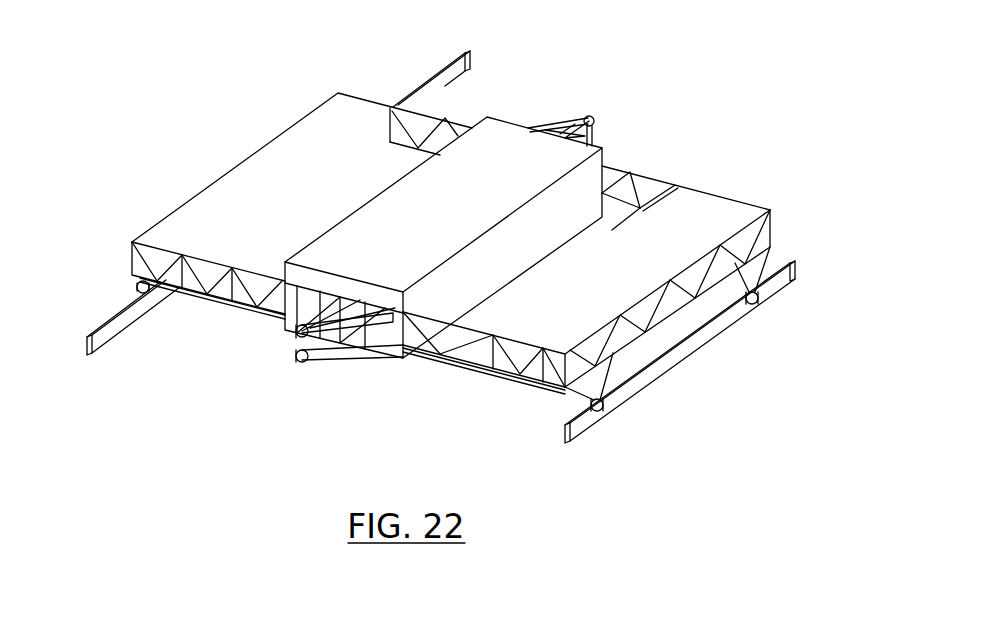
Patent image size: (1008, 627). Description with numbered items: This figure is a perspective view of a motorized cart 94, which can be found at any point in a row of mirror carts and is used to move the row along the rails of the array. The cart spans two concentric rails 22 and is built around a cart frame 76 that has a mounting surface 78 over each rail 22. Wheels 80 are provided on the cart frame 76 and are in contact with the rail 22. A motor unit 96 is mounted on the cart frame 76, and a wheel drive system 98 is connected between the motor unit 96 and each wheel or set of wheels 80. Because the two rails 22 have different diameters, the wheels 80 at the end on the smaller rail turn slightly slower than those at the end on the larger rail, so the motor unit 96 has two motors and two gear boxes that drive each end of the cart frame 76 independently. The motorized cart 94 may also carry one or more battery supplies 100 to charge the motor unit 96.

The rail 22 is at (791, 292).
The cart frame 76 is at (627, 166).
The mounting surface 78 is at (247, 172).
The wheel 80 is at (135, 288).
The motorized cart 94 is at (728, 102).
The motor unit 96 is at (510, 124).
The wheel drive system 98 is at (240, 308).
The battery supply 100 is at (217, 237).